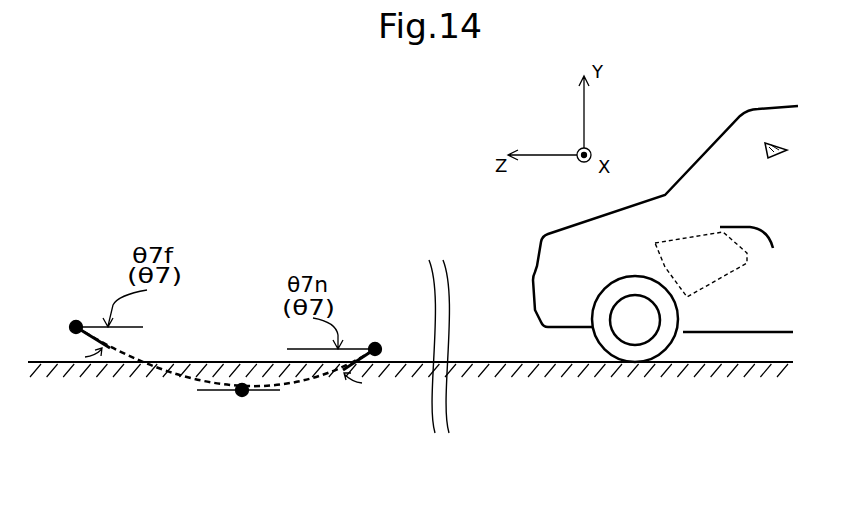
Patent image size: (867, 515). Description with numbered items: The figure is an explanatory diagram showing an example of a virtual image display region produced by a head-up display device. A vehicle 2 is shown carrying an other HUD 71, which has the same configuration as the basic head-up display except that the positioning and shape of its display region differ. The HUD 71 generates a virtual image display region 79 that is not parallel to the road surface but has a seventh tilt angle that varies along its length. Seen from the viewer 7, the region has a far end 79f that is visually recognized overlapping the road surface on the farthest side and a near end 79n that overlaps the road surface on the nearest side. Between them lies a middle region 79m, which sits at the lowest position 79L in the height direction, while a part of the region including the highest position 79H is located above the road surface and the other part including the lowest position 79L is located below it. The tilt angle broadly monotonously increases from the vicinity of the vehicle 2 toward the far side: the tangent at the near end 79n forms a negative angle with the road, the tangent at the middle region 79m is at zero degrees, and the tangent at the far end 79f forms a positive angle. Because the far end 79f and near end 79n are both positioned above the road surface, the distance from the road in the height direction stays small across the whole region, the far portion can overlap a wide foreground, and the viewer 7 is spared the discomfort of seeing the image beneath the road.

The vehicle 2 is at (533, 281).
The viewer 7 is at (787, 149).
The HUD 71 is at (747, 258).
The virtual image display region 79 is at (190, 377).
The far end 79f is at (85, 296).
The highest position 79H is at (75, 320).
The middle region 79m is at (275, 410).
The lowest position 79L is at (245, 395).
The near end 79n is at (380, 344).